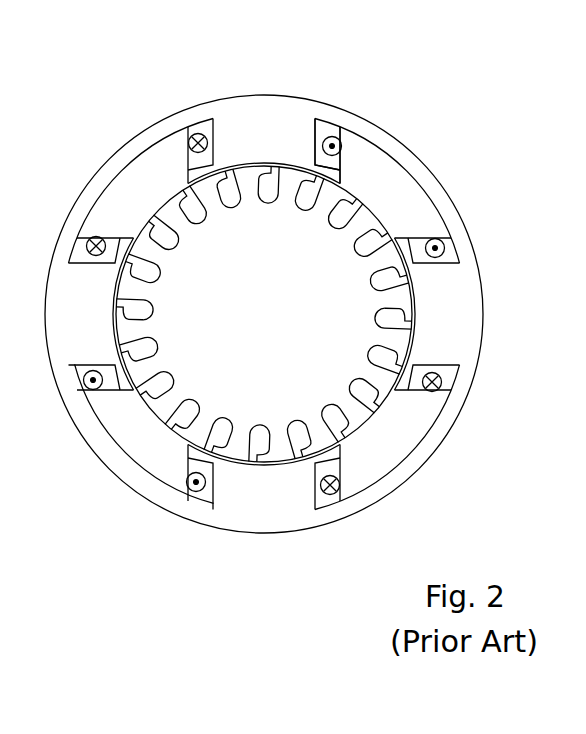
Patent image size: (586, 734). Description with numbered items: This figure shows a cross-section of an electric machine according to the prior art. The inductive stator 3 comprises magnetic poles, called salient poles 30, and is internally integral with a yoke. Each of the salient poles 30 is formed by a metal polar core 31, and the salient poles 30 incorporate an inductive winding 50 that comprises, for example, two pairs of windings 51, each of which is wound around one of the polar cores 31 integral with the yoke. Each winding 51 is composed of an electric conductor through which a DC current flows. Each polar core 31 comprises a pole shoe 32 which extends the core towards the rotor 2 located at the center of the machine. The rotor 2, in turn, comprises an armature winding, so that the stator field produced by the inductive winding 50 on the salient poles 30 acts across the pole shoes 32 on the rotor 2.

The rotor 2 is at (383, 392).
The inductive stator 3 is at (358, 128).
The salient poles 30 is at (255, 112).
The polar core 31 is at (303, 145).
The pole shoe 32 is at (342, 176).
The inductive winding 50 is at (342, 148).
The windings 51 is at (198, 133).